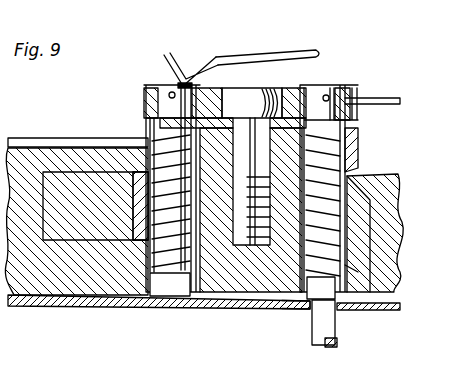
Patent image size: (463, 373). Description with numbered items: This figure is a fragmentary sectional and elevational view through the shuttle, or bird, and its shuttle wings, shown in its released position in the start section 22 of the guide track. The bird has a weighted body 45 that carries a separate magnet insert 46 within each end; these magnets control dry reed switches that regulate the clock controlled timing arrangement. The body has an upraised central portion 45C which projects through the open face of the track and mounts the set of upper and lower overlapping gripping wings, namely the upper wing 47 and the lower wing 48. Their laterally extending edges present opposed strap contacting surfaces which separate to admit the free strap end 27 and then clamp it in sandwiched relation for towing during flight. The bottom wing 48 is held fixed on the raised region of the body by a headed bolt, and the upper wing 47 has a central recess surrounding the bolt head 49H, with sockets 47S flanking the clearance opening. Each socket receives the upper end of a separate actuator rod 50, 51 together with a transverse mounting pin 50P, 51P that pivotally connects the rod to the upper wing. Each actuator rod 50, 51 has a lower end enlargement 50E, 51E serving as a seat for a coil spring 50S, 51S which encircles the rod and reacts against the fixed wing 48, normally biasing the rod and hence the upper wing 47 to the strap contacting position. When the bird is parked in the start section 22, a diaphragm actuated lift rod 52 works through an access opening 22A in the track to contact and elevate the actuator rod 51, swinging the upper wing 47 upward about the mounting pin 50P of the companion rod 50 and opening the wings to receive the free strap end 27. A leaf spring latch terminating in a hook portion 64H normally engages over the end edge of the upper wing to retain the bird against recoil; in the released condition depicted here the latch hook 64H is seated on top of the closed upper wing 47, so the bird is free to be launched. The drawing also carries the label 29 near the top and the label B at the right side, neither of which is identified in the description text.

The start section 22 is at (90, 306).
The access opening 22A is at (294, 307).
The free strap end 27 is at (392, 98).
The assembly 29 is at (373, 14).
The weighted body 45 is at (242, 280).
The upraised central portion 45C is at (357, 148).
The magnet insert 46 is at (100, 245).
The upper gripping wing 47 is at (208, 83).
The sockets 47S is at (173, 82).
The lower gripping wing 48 is at (312, 95).
The bolt head 49H is at (250, 97).
The actuator rod 50 is at (146, 132).
The transverse mounting pin 50P is at (160, 88).
The coil spring 50S is at (145, 143).
The lower end enlargement 50E is at (165, 300).
The actuator rod 51 is at (352, 117).
The transverse mounting pin 51P is at (333, 96).
The coil spring 51S is at (360, 153).
The lower end enlargement 51E is at (353, 308).
The lift rod 52 is at (327, 328).
The hook portion 64H is at (168, 56).
The block B is at (358, 272).